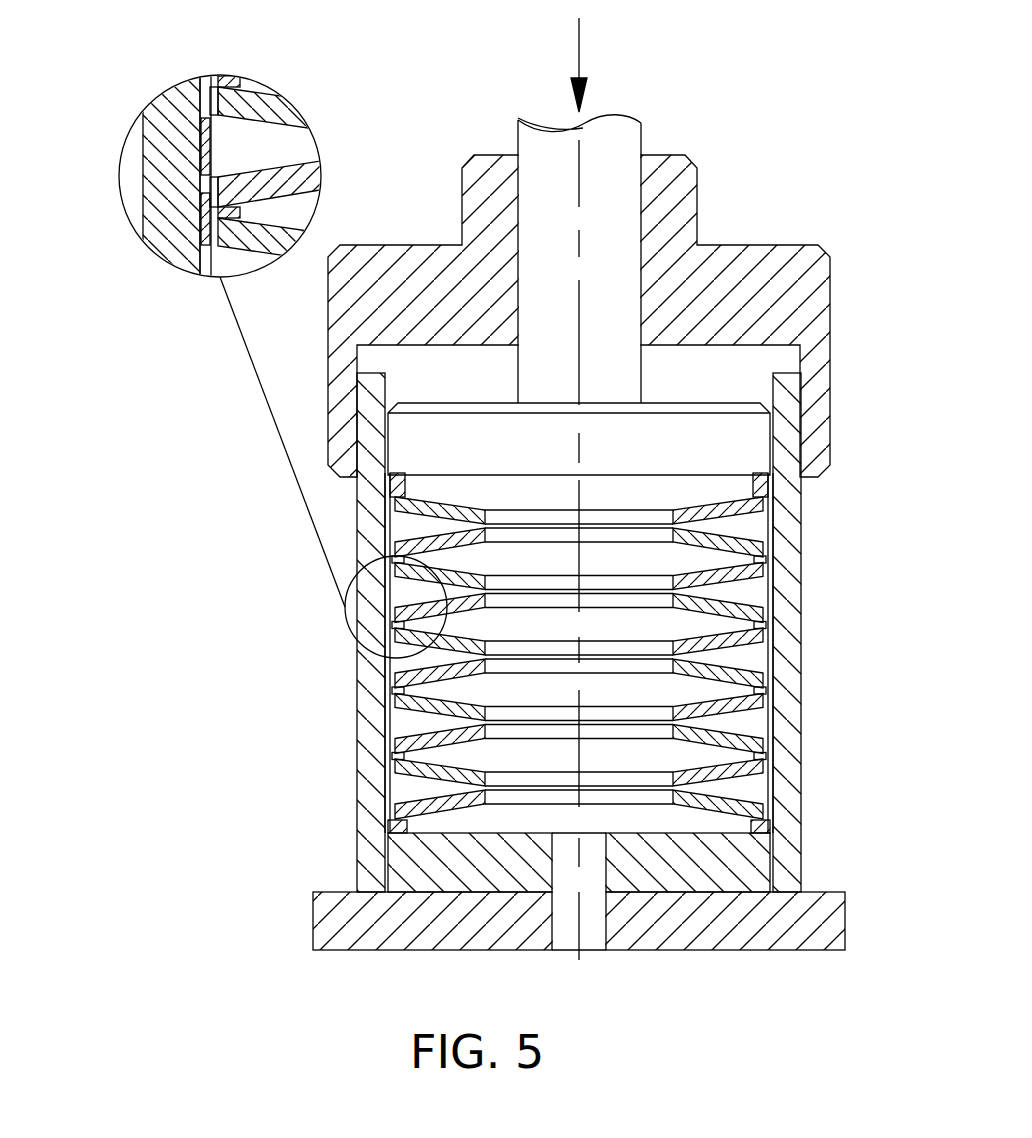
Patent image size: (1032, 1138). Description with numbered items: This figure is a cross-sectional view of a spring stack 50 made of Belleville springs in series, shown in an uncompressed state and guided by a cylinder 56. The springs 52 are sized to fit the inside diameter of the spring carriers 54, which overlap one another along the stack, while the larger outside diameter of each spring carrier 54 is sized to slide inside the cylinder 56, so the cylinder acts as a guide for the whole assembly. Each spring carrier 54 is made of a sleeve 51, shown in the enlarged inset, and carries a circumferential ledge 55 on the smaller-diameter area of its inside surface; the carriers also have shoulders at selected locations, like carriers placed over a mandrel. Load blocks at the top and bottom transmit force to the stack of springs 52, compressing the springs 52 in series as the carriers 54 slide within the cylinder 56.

The spring stack 50 is at (802, 221).
The sleeve 51 is at (208, 118).
The springs 52 is at (772, 795).
The spring carriers 54 is at (245, 60).
The circumferential ledge 55 is at (765, 628).
The cylinder 56 is at (782, 597).